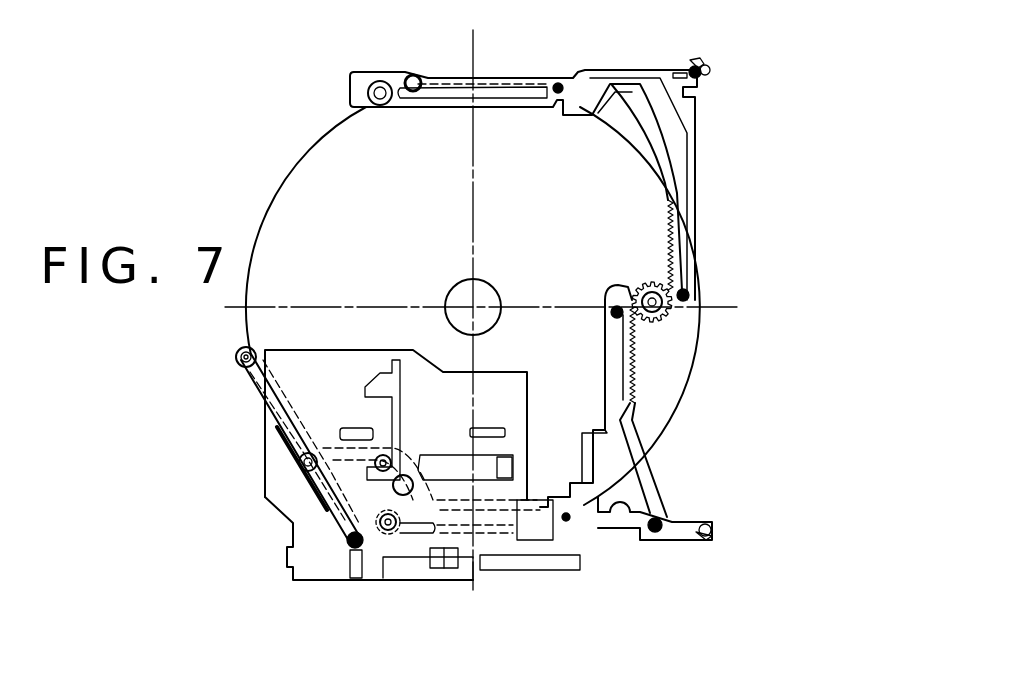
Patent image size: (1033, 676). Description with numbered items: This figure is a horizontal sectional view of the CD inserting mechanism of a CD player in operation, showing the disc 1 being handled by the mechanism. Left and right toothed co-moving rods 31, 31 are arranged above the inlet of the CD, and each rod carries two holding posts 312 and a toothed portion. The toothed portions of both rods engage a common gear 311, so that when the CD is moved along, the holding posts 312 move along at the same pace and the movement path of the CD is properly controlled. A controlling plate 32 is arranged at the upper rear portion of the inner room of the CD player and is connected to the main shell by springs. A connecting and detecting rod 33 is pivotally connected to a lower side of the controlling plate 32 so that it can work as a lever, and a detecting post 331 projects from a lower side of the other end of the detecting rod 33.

The disc 1 is at (290, 213).
The toothed co-moving rod 31 is at (695, 152).
The common gear 311 is at (653, 327).
The holding post 312 is at (380, 80).
The controlling plate 32 is at (308, 560).
The connecting and detecting rod 33 is at (252, 400).
The detecting post 331 is at (235, 360).